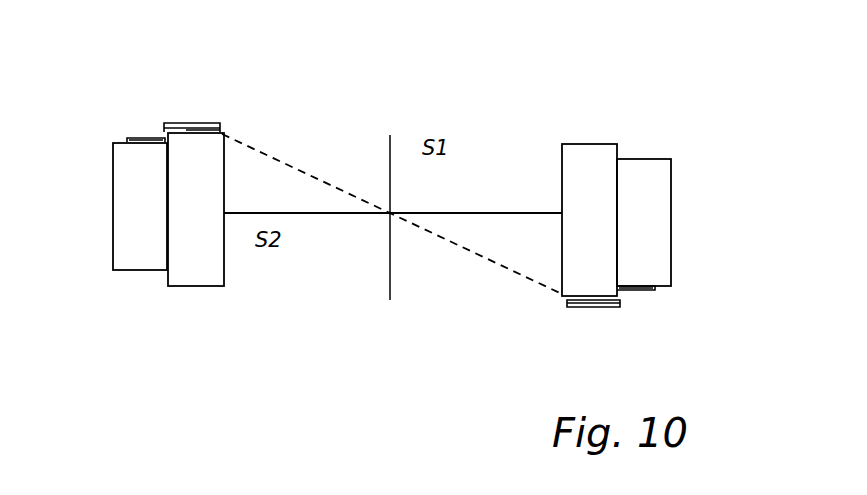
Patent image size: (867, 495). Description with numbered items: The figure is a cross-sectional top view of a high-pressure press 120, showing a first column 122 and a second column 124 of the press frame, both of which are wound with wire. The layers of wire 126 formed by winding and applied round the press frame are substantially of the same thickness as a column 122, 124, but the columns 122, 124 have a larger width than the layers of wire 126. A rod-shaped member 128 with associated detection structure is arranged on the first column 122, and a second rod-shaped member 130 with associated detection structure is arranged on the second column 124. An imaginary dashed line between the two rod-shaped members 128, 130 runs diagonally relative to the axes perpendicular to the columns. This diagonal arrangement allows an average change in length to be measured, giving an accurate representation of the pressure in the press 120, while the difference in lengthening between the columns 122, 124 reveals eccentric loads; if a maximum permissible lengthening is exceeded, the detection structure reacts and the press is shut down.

The high-pressure press 120 is at (648, 122).
The first column 122 is at (195, 275).
The second column 124 is at (585, 155).
The layers of wire 126 is at (128, 258).
The rod-shaped member 128 is at (190, 120).
The second rod-shaped member 130 is at (583, 308).